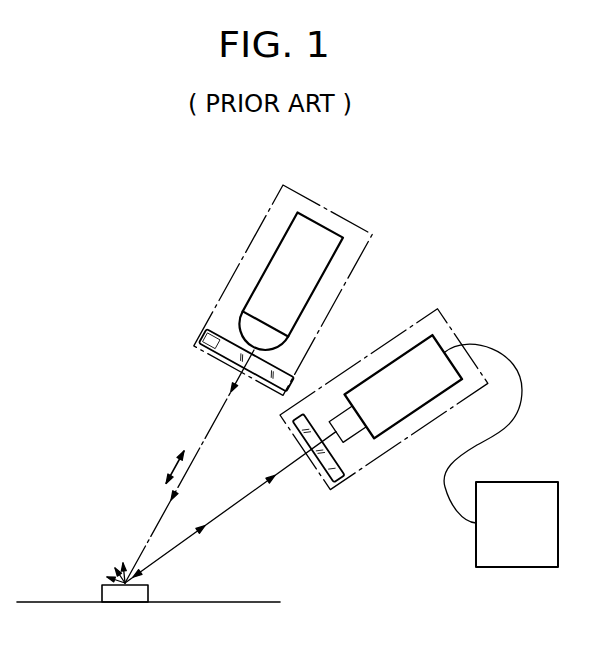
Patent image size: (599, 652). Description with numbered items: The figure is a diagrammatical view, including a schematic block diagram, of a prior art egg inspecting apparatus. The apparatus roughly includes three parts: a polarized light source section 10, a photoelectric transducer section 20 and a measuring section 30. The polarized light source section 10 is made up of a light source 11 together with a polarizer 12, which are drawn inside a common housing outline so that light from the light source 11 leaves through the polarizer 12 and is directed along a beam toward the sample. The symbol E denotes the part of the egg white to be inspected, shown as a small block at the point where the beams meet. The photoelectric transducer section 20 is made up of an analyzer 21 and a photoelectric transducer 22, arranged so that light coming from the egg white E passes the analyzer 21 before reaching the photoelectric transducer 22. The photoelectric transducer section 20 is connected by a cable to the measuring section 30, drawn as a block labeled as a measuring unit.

The polarized light source section 10 is at (348, 219).
The light source 11 is at (280, 248).
The polarizer 12 is at (208, 350).
The photoelectric transducer section 20 is at (445, 322).
The analyzer 21 is at (330, 486).
The photoelectric transducer 22 is at (438, 399).
The measuring section 30 is at (531, 482).
The part of the egg white to be inspected E is at (149, 593).